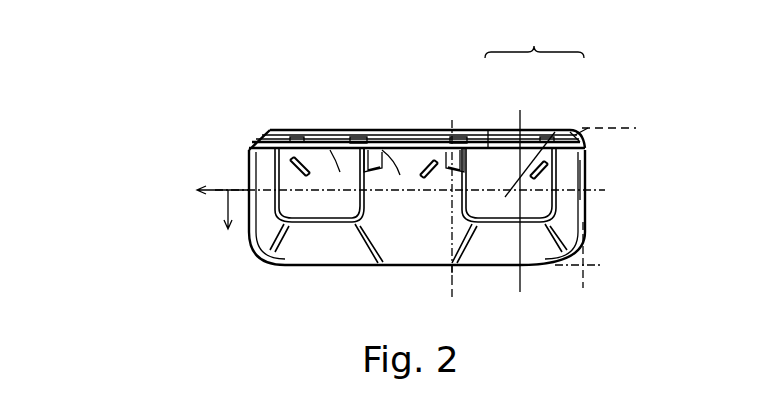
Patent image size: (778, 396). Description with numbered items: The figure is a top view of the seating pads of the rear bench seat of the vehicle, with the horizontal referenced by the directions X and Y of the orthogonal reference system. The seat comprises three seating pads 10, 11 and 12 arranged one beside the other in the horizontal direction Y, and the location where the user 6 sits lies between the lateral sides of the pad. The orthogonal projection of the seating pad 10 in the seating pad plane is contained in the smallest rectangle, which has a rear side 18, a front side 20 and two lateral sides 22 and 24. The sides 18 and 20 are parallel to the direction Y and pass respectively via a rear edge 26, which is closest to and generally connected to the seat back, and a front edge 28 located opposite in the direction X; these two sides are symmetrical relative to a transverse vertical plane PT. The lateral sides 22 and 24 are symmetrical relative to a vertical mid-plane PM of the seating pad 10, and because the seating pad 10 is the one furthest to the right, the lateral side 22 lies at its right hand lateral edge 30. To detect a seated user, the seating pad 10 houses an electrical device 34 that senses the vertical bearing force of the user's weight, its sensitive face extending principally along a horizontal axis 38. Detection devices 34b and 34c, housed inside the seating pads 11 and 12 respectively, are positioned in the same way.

The user 6 is at (278, 125).
The seating pad 10 is at (534, 40).
The seating pad 11 is at (392, 160).
The seating pad 12 is at (340, 160).
The rear side 18 is at (632, 128).
The front side 20 is at (596, 265).
The lateral side 22 is at (583, 279).
The lateral side 24 is at (452, 279).
The rear edge 26 is at (497, 130).
The front edge 28 is at (478, 268).
The right hand lateral edge 30 is at (585, 165).
The electrical device 34 is at (535, 160).
The detection device 34b is at (438, 145).
The detection device 34c is at (300, 158).
The horizontal axis 38 is at (578, 128).
The vertical mid-plane PM is at (522, 290).
The transverse vertical plane PT is at (240, 190).